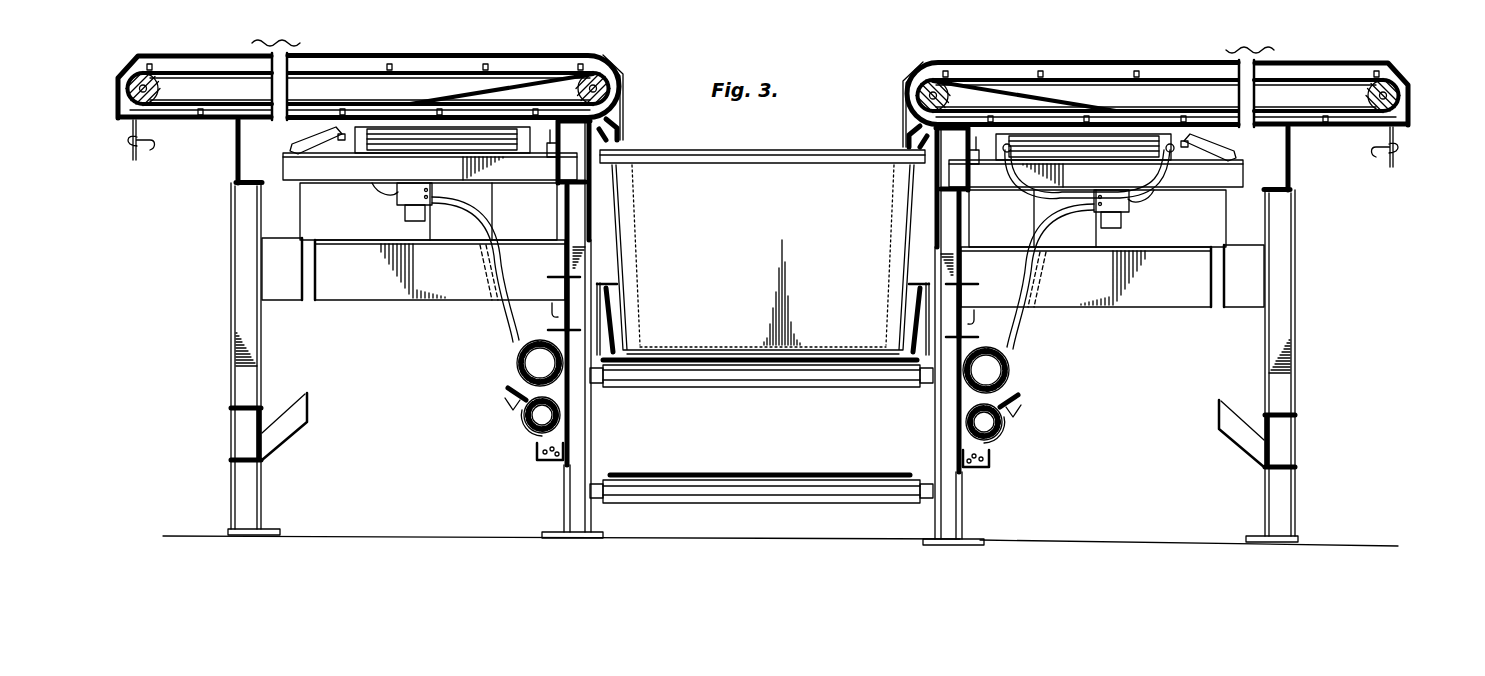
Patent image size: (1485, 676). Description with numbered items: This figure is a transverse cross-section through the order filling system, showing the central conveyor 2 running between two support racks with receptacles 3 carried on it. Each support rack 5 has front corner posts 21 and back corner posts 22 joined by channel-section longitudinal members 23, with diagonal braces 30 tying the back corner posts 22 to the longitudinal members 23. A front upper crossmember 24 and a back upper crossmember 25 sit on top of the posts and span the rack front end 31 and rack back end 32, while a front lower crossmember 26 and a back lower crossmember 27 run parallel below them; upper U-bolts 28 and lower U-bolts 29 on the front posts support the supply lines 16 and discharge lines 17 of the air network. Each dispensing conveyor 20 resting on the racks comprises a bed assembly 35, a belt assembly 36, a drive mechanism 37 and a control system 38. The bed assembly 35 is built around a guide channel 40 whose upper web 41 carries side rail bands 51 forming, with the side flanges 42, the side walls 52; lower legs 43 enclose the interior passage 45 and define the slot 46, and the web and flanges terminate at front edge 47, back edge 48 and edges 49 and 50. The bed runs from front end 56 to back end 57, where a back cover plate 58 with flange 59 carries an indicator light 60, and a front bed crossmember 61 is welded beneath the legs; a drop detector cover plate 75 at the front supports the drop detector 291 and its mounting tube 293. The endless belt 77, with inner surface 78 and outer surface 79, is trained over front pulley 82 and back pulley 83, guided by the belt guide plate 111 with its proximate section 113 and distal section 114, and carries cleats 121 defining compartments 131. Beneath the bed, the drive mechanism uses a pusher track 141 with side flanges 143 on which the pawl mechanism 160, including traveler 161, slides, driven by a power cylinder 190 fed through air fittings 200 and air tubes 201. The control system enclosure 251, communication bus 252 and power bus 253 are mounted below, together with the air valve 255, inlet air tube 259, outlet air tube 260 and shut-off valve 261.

The central conveyor 2 is at (674, 512).
The receptacles 3 is at (740, 128).
The support rack 5 is at (228, 534).
The supply lines 16 is at (528, 431).
The discharge lines 17 is at (508, 390).
The power-driven conveyor 20 is at (115, 119).
The front corner posts 21 is at (565, 524).
The back corner posts 22 is at (262, 501).
The longitudinal members 23 is at (370, 303).
The front upper crossmember 24 is at (598, 176).
The back upper crossmember 25 is at (236, 150).
The front lower crossmember 26 is at (560, 278).
The back lower crossmember 27 is at (232, 408).
The upper U-bolts 28 is at (515, 366).
The lower U-bolts 29 is at (522, 421).
The diagonal braces 30 is at (297, 434).
The rack front end 31 is at (590, 428).
The rack back end 32 is at (229, 281).
The bed assembly 35 is at (117, 76).
The belt assembly 36 is at (127, 92).
The drive mechanism 37 is at (360, 152).
The control system 38 is at (592, 242).
The guide channel 40 is at (1345, 131).
The upper web 41 is at (446, 86).
The side flanges 42 is at (1212, 101).
The lower legs 43 is at (408, 108).
The interior passage 45 is at (1348, 90).
The slot 46 is at (565, 106).
The upper web front edge 47 is at (575, 55).
The upper web back edge 48 is at (186, 89).
The side flange front edges 49 is at (625, 92).
The side flange back edges 50 is at (116, 113).
The side rail bands 51 is at (358, 52).
The bed assembly side walls 52 is at (1015, 101).
The bed assembly front end 56 is at (912, 120).
The bed assembly back end 57 is at (118, 86).
The back cover plate 58 is at (125, 66).
The back cover plate flange 59 is at (134, 160).
The indicator light 60 is at (157, 142).
The front bed crossmember 61 is at (551, 152).
The drop detector cover plate 75 is at (906, 140).
The endless belt 77 is at (437, 62).
The belt inner surface 78 is at (231, 89).
The belt outer surface 79 is at (545, 58).
The front pulley 82 is at (585, 65).
The back pulley 83 is at (141, 55).
The belt guide plate 111 is at (743, 92).
The guide plate proximate section 113 is at (500, 73).
The guide plate distal section 114 is at (343, 91).
The cleats 121 is at (395, 62).
The compartments 131 is at (237, 60).
The pusher track 141 is at (305, 184).
The pusher track side flanges 143 is at (378, 188).
The pawl mechanism 160 is at (294, 136).
The traveler 161 is at (303, 156).
The power cylinder 190 is at (435, 150).
The air fittings 200 is at (1005, 165).
The air tubes 201 is at (395, 201).
The enclosure 251 is at (478, 219).
The communication bus 252 is at (555, 305).
The power bus 253 is at (546, 462).
The air valve 255 is at (408, 214).
The inlet air tube 259 is at (500, 345).
The outlet air tube 260 is at (497, 318).
The shut-off valve 261 is at (503, 404).
The drop detector 291 is at (615, 140).
The photoelectric sensor mounting tube 293 is at (620, 126).